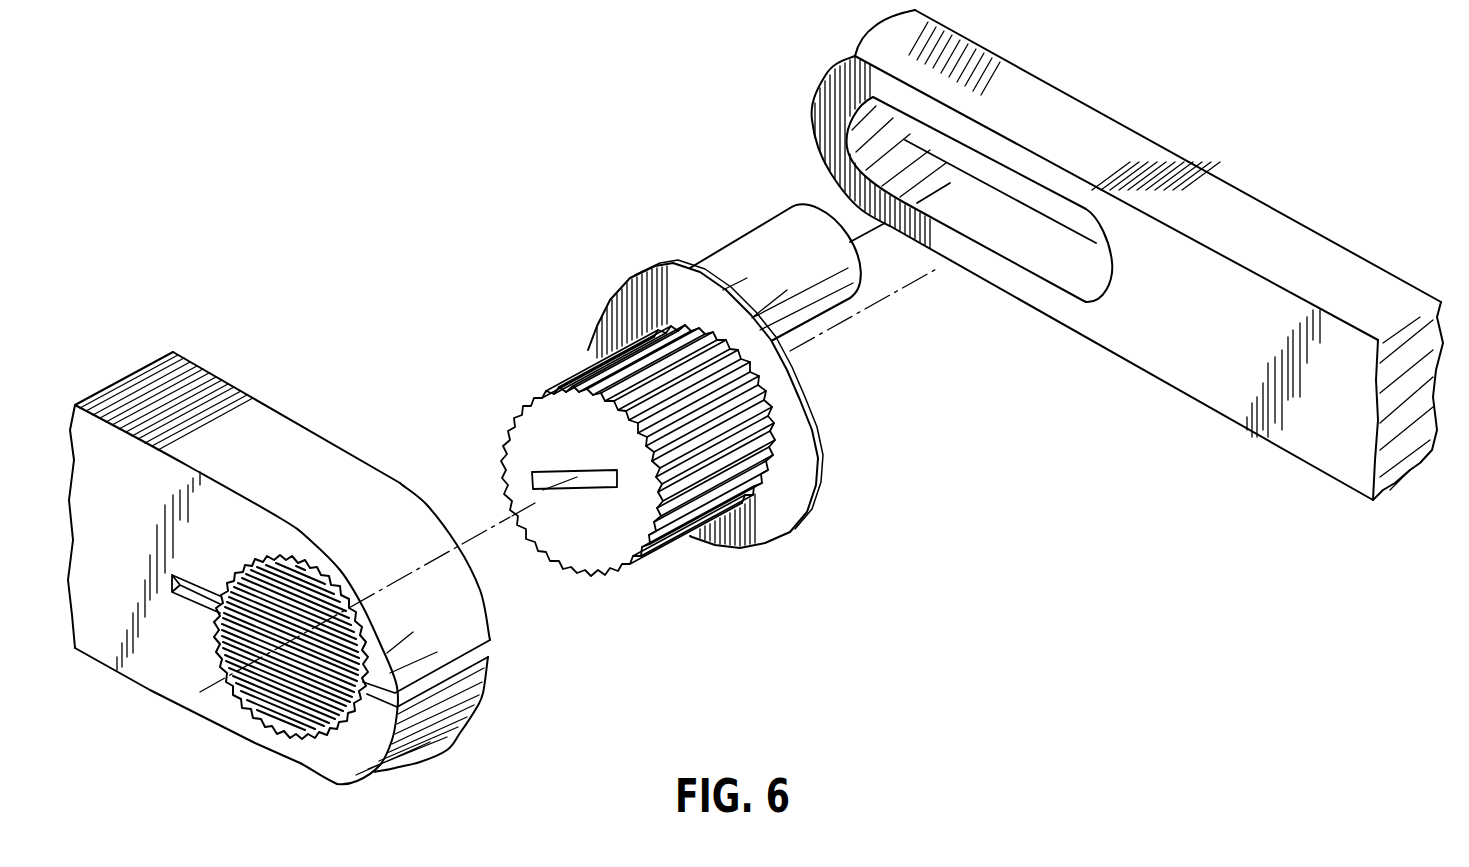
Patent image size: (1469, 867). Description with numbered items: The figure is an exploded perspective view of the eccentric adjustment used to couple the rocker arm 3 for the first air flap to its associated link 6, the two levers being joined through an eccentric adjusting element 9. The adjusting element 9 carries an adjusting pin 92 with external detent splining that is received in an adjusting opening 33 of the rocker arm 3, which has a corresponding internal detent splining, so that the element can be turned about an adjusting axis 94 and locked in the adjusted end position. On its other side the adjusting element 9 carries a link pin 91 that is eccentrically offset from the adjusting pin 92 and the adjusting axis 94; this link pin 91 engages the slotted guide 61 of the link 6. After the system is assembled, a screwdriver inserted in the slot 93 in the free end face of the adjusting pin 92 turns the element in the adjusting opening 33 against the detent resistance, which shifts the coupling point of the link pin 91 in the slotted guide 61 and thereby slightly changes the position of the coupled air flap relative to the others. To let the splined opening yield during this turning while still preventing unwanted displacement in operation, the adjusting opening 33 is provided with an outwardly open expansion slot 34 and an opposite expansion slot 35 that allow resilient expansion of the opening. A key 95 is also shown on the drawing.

The rocker arm 3 is at (258, 410).
The adjusting opening 33 is at (275, 700).
The expansion slot 34 is at (492, 648).
The expansion slot 35 is at (188, 600).
The link 6 is at (1300, 248).
The slotted guide 61 is at (849, 143).
The eccentric adjusting element 9 is at (818, 497).
The link pin 91 is at (763, 253).
The adjusting pin 92 is at (567, 363).
The slot 93 is at (577, 487).
The adjusting axis 94 is at (890, 301).
The key 95 is at (873, 228).